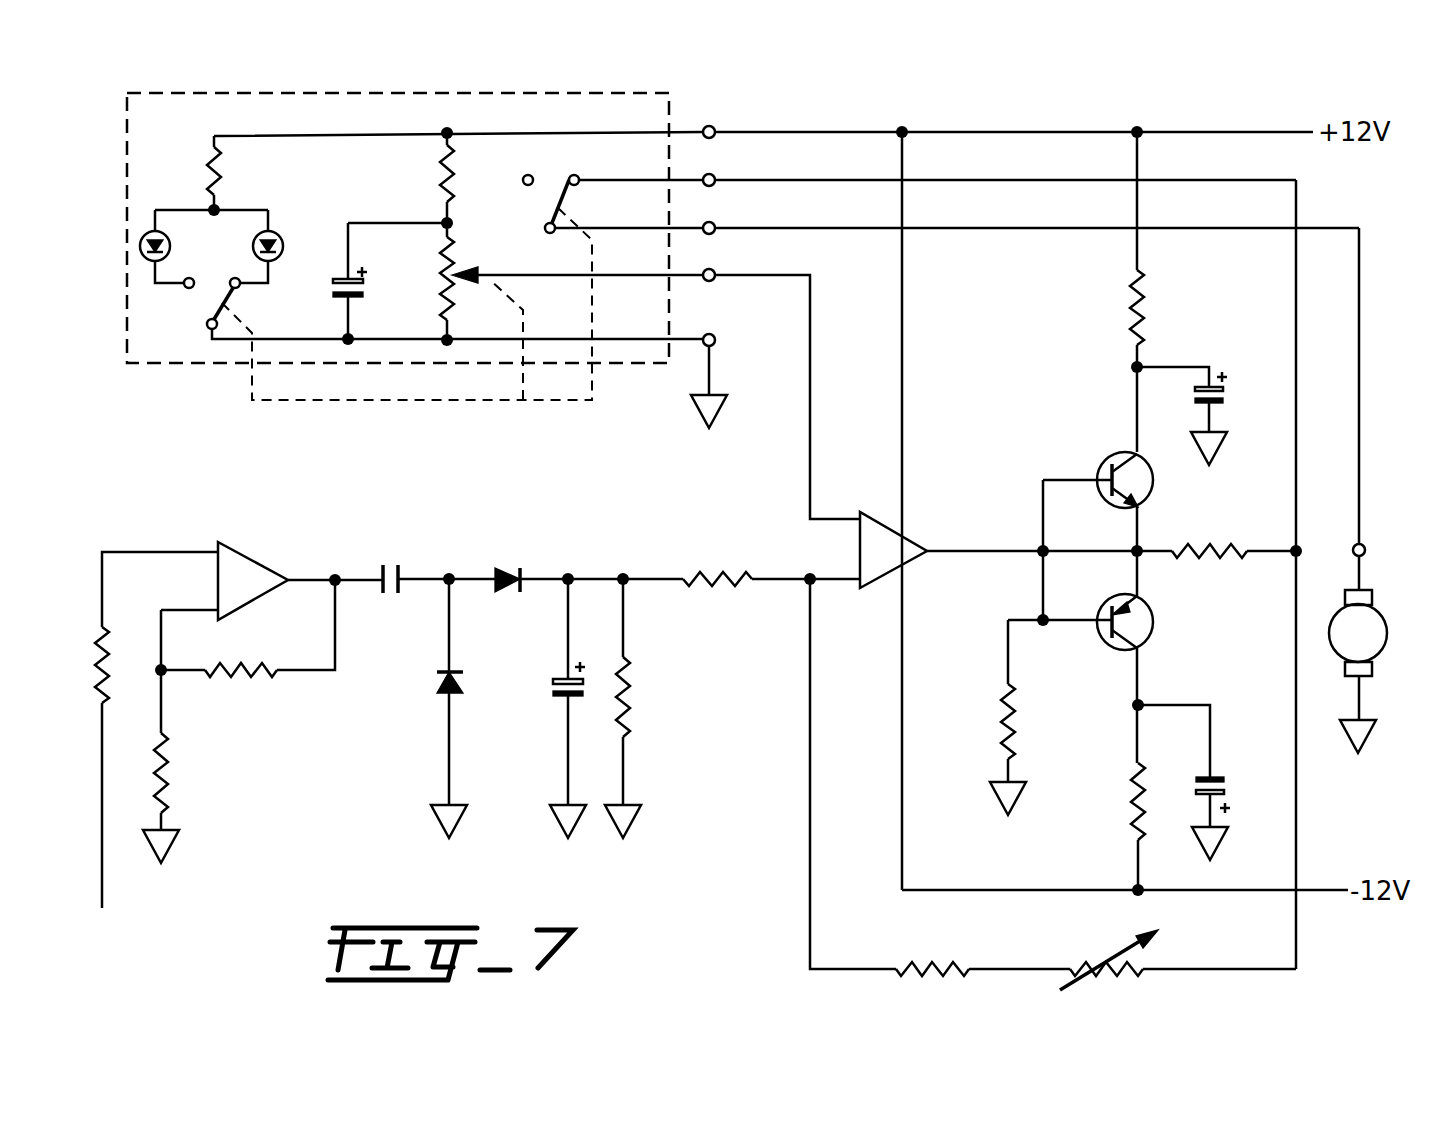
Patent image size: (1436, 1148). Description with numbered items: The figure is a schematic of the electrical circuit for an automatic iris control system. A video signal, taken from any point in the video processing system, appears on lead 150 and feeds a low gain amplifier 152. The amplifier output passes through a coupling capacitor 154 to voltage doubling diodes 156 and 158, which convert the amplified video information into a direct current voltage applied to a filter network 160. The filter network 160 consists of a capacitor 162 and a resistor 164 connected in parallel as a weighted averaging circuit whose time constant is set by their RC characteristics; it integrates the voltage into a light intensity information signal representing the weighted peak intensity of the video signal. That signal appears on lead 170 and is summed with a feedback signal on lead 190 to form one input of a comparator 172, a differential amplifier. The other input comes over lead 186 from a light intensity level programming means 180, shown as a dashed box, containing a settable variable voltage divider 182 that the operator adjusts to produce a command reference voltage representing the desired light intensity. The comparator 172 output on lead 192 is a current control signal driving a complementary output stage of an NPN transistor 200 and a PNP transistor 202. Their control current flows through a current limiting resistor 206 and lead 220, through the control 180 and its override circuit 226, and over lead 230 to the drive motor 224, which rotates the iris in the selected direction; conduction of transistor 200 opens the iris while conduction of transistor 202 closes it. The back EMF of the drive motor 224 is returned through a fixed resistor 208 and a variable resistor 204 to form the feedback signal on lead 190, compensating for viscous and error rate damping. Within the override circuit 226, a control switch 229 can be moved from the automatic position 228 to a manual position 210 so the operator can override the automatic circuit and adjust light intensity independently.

The lead 150 is at (103, 872).
The low gain amplifier 152 is at (258, 573).
The coupling capacitor 154 is at (397, 567).
The voltage doubling diode 156 is at (442, 688).
The voltage doubling diode 158 is at (507, 570).
The filter network 160 is at (648, 701).
The capacitor 162 is at (560, 692).
The resistor 164 is at (628, 678).
The lead 170 is at (832, 575).
The comparator 172 is at (903, 548).
The light intensity level programming means 180 is at (612, 362).
The variable voltage divider 182 is at (470, 246).
The lead 186 is at (812, 400).
The lead 190 is at (813, 757).
The lead 192 is at (1003, 553).
The NPN transistor 200 is at (1103, 457).
The PNP transistor 202 is at (1113, 650).
The variable resistor 204 is at (1142, 965).
The current limiting resistor 206 is at (1210, 560).
The fixed resistor 208 is at (948, 963).
The manual position 210 is at (523, 184).
The lead 220 is at (1295, 475).
The drive motor 224 is at (1378, 652).
The override circuit 226 is at (590, 202).
The automatic position 228 is at (578, 174).
The control switch 229 is at (553, 207).
The lead 230 is at (1362, 505).